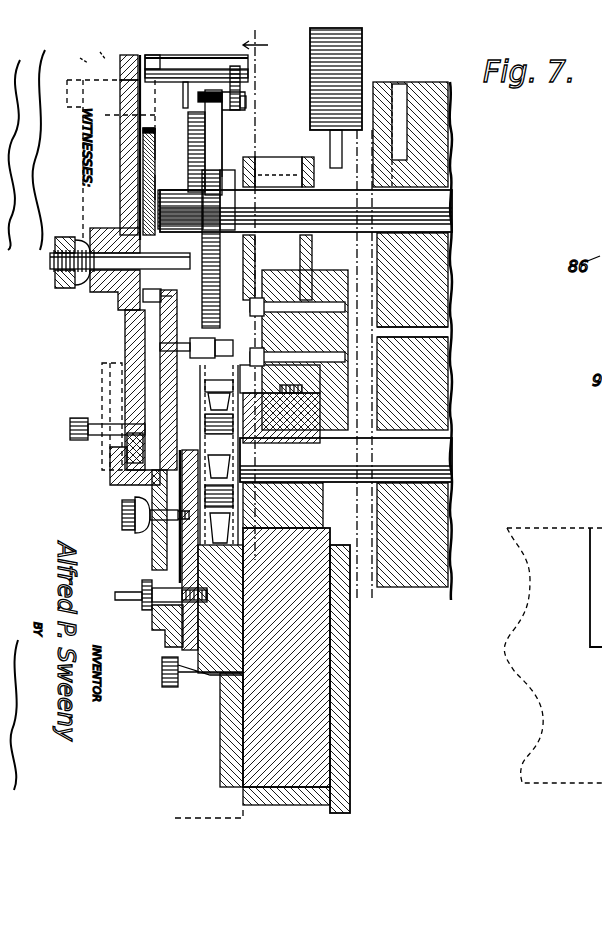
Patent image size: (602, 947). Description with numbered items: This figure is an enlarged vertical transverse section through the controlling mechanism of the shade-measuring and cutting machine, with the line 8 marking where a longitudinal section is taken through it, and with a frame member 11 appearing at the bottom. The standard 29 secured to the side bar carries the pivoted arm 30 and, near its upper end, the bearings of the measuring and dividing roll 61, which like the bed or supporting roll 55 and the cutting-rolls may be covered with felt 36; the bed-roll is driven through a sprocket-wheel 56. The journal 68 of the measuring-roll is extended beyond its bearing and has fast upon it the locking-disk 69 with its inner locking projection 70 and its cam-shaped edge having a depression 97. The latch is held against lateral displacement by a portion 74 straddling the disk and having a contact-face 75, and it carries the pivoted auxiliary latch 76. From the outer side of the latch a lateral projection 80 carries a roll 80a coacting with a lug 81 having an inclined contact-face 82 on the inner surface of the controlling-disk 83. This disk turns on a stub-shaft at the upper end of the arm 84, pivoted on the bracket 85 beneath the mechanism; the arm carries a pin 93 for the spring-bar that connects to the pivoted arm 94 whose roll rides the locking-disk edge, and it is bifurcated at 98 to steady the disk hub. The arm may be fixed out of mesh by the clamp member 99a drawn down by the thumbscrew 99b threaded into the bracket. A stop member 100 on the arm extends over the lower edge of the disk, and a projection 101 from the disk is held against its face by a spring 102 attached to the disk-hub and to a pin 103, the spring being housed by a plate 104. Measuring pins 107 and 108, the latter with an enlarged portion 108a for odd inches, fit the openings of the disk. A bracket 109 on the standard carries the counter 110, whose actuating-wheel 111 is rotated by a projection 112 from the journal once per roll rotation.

The section line 8 8 is at (209, 421).
The frame block 11 is at (274, 670).
The standard 29 is at (290, 185).
The arm 30 is at (314, 256).
The felt covering 36 is at (440, 336).
The bed or supporting roll 55 is at (455, 405).
The sprocket-wheel 56 is at (246, 536).
The measuring and dividing roll 61 is at (455, 151).
The journal 68 is at (160, 198).
The locking member or disk 69 is at (215, 129).
The locking projection 70 is at (247, 102).
The portion straddling the disk 74 is at (186, 100).
The contact-face 75 is at (233, 98).
The auxiliary latch 76 is at (240, 92).
The lateral projection 80 is at (165, 56).
The roll 80a is at (148, 56).
The lug or projection 81 is at (128, 80).
The inclined contact-face 82 is at (125, 124).
The controlling member or disk 83 is at (138, 159).
The arm 84 is at (170, 376).
The bracket 85 is at (220, 716).
The pin 93 is at (185, 346).
The arm 94 is at (222, 376).
The depression 97 is at (222, 250).
The bifurcation 98 is at (160, 209).
The clamp member 99a is at (155, 622).
The thumbscrew 99b is at (116, 596).
The stop member 100 is at (112, 488).
The projection 101 is at (72, 432).
The spring 102 is at (156, 186).
The pin 103 is at (175, 299).
The plate 104 is at (156, 158).
The pin 107 is at (162, 674).
The pin 108 is at (62, 50).
The enlarged portion 108a is at (88, 45).
The bracket 109 is at (412, 280).
The counter 110 is at (362, 55).
The actuating-wheel 111 is at (330, 148).
The projection 112 is at (364, 162).